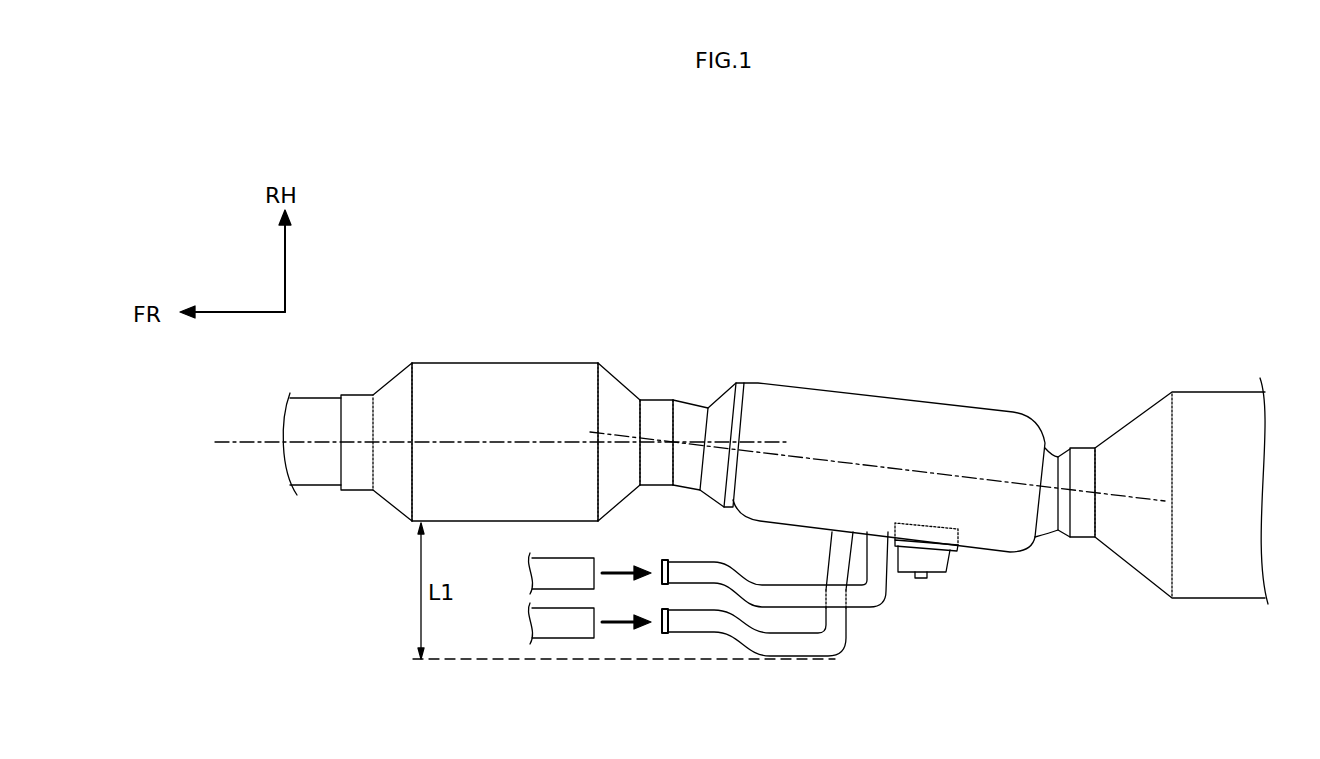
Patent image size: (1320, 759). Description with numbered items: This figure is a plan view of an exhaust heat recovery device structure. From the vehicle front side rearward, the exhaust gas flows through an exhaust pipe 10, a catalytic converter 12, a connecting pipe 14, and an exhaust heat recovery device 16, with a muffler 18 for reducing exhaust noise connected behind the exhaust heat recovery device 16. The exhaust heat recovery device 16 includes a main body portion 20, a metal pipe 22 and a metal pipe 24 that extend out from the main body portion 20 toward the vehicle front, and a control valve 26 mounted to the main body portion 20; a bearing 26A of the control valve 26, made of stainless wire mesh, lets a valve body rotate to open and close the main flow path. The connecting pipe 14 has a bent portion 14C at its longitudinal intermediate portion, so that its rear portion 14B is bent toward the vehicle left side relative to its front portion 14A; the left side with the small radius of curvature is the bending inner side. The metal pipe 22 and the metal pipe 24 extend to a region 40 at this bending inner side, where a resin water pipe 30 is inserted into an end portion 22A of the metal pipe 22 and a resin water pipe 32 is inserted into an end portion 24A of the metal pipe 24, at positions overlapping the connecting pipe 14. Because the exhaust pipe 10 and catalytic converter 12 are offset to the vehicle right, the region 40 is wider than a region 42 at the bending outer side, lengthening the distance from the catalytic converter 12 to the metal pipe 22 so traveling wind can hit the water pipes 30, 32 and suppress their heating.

The exhaust pipe 10 is at (320, 397).
The catalytic converter 12 is at (512, 360).
The connecting pipe 14 is at (698, 388).
The front portion 14A is at (652, 396).
The rear portion 14B is at (698, 404).
The bent portion 14C is at (673, 400).
The exhaust heat recovery device 16 is at (897, 408).
The muffler 18 is at (1213, 390).
The main body portion 20 is at (907, 397).
The metal pipe 22 is at (791, 628).
The end portion 22A is at (663, 634).
The metal pipe 24 is at (815, 612).
The end portion 24A is at (667, 560).
The control valve 26 is at (980, 598).
The bearing 26A is at (958, 529).
The water pipe 30 is at (567, 640).
The water pipe 32 is at (563, 557).
The region 40 is at (667, 535).
The region 42 is at (705, 337).